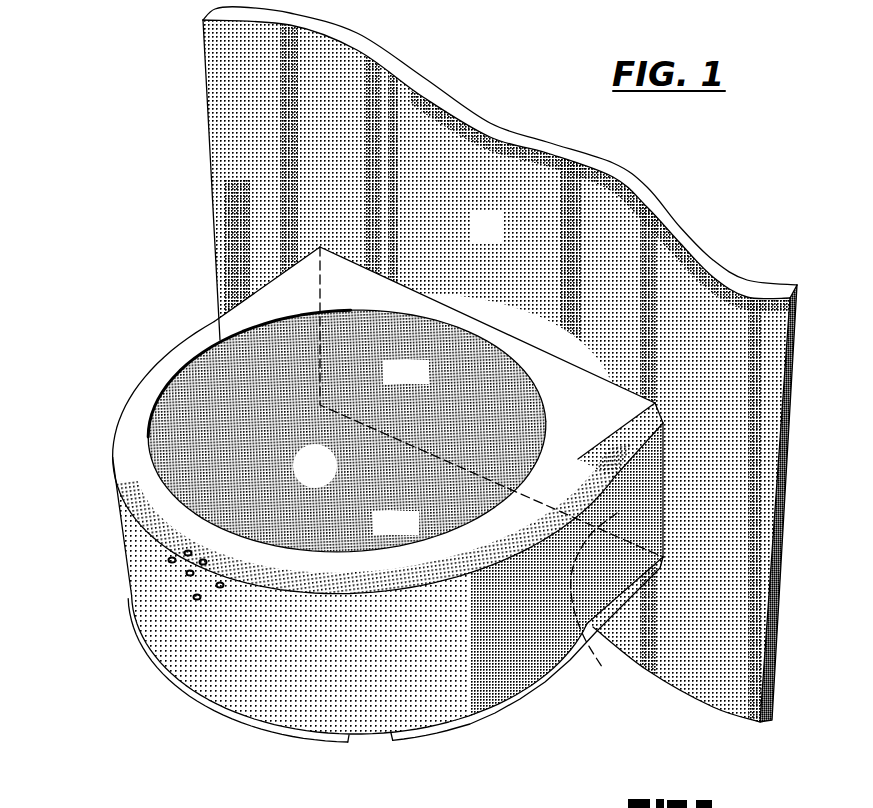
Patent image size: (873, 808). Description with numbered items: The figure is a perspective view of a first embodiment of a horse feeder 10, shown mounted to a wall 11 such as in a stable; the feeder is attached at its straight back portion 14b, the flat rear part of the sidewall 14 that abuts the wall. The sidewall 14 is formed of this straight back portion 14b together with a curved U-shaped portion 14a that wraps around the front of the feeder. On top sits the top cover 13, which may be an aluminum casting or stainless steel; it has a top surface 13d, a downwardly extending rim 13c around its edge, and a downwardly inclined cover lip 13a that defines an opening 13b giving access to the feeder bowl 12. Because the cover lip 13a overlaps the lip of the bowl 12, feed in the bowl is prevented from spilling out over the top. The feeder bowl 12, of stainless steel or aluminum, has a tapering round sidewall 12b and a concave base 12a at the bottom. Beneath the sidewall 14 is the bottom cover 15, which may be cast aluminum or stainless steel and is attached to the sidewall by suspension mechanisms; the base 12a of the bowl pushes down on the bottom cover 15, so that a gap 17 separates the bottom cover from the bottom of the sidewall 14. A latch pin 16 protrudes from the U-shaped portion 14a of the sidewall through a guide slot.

The horse feeder 10 is at (180, 313).
The wall 11 is at (475, 239).
The feeder bowl 12 is at (194, 449).
The concave base 12a is at (340, 546).
The tapering round sidewall 12b is at (237, 403).
The top cover 13 is at (134, 390).
The cover lip 13a is at (215, 321).
The opening 13b is at (324, 312).
The rim 13c is at (627, 441).
The top surface 13d is at (627, 424).
The sidewall 14 is at (406, 686).
The U-shaped portion 14a is at (330, 687).
The straight back portion 14b is at (594, 603).
The bottom cover 15 is at (477, 728).
The latch pin 16 is at (196, 569).
The gap 17 is at (522, 688).